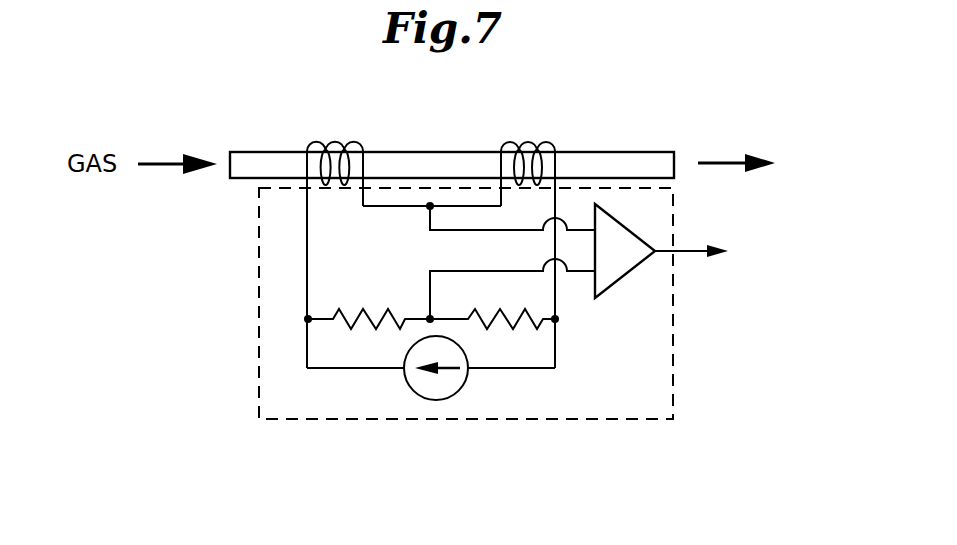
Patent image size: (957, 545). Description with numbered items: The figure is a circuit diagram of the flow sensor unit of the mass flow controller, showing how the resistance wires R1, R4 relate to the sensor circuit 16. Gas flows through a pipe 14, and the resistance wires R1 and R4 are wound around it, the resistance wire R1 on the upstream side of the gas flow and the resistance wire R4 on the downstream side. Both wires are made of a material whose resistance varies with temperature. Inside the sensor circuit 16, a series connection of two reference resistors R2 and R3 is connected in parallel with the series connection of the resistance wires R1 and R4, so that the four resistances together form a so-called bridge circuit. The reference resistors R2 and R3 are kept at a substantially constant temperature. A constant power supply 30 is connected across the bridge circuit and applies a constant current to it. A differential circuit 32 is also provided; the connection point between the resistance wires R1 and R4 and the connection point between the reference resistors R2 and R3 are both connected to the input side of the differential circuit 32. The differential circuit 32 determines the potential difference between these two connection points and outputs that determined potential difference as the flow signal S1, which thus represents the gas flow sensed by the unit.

The gas pipe 14 is at (262, 151).
The sensor circuit 16 is at (600, 420).
The resistance wire R1 is at (331, 141).
The resistance wire R4 is at (522, 141).
The reference resistor R2 is at (377, 348).
The reference resistor R3 is at (514, 348).
The constant power supply 30 is at (438, 401).
The differential circuit 32 is at (628, 272).
The flow signal S1 is at (707, 251).